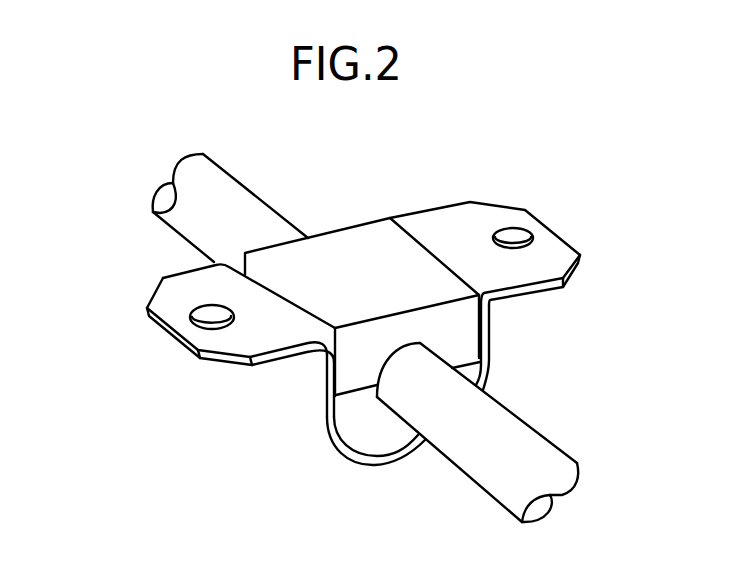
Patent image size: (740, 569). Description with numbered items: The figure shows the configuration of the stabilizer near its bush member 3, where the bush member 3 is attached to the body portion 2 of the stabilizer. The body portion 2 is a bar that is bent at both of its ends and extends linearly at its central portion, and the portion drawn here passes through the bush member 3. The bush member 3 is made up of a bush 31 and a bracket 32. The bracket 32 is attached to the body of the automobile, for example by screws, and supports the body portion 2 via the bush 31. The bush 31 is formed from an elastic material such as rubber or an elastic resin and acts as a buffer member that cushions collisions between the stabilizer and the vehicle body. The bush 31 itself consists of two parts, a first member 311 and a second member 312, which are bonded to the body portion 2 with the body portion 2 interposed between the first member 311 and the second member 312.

The body portion 2 is at (528, 440).
The bush member 3 is at (342, 305).
The bush 31 is at (342, 247).
The bracket 32 is at (180, 287).
The first member 311 is at (353, 422).
The second member 312 is at (348, 363).